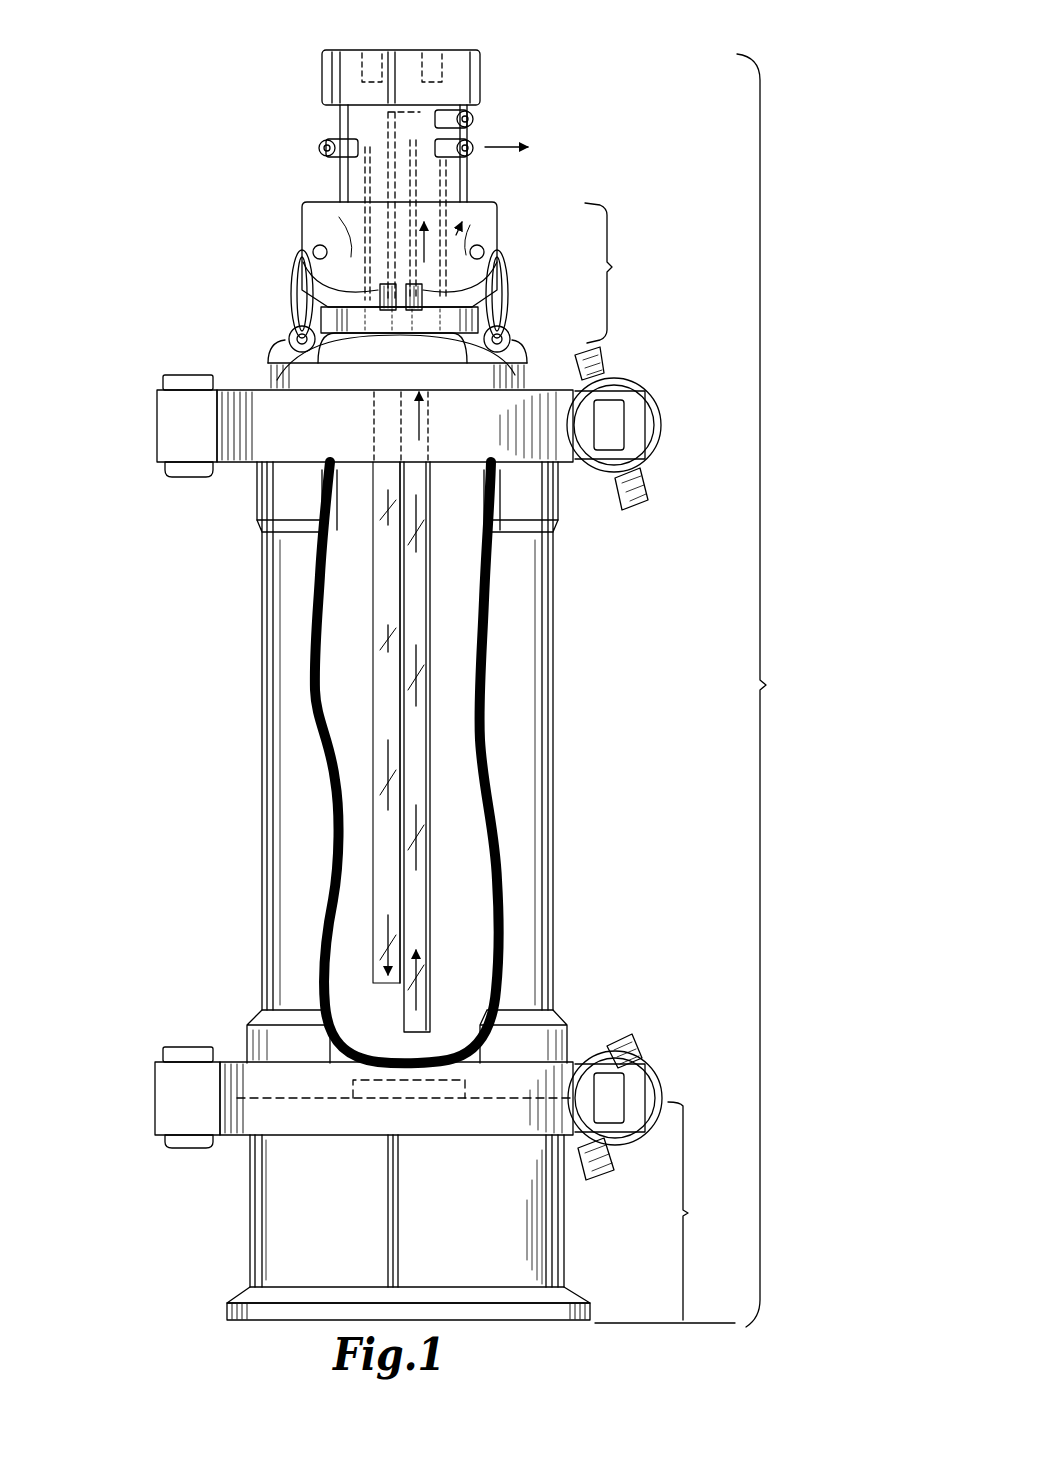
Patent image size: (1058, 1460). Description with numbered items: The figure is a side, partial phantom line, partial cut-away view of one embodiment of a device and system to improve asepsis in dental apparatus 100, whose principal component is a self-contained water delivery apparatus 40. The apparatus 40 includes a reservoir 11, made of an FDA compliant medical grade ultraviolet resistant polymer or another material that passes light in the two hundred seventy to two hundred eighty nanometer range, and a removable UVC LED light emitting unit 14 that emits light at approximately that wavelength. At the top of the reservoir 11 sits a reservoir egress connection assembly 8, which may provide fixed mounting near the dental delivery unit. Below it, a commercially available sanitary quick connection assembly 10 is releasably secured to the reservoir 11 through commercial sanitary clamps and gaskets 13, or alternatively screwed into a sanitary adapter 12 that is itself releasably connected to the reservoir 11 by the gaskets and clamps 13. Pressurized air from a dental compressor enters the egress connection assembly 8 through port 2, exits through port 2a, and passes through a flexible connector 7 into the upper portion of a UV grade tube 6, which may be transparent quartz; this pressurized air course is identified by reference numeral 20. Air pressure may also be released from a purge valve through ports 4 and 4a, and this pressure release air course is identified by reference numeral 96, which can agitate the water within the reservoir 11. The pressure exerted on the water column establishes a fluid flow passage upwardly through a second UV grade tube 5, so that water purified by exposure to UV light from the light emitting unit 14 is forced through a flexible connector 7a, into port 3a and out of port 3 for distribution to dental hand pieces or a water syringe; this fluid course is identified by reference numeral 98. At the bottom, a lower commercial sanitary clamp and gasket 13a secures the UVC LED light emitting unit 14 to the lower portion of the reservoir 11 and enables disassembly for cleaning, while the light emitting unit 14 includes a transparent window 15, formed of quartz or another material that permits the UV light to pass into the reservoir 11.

The device and system to improve asepsis in dental apparatus 100 is at (197, 195).
The reservoir egress connection assembly 8 is at (737, 54).
The pressurized air course 20 is at (413, 104).
The pressure release air course 96 is at (304, 138).
The port 4 is at (318, 145).
The port 2 is at (448, 108).
The port 3 is at (456, 152).
The fluid course 98 is at (505, 143).
The sanitary quick connection assembly 10 is at (612, 267).
The port 3a is at (442, 297).
The port 2a is at (383, 289).
The port 4a is at (392, 297).
The flexible connector 7a is at (422, 300).
The sanitary adapter 12 is at (276, 360).
The flexible connector 7 is at (278, 380).
The sanitary clamps and gaskets 13 is at (157, 423).
The reservoir 11 is at (556, 608).
The UV grade tube 6 is at (364, 684).
The second UV grade tube 5 is at (436, 700).
The lower sanitary clamp and gasket 13a is at (155, 1086).
The window 15 is at (430, 1088).
The UVC LED light emitting unit 14 is at (689, 1212).
The self-contained water delivery apparatus 40 is at (766, 685).